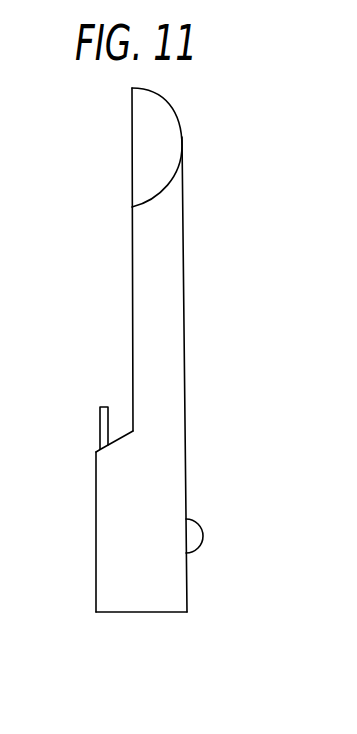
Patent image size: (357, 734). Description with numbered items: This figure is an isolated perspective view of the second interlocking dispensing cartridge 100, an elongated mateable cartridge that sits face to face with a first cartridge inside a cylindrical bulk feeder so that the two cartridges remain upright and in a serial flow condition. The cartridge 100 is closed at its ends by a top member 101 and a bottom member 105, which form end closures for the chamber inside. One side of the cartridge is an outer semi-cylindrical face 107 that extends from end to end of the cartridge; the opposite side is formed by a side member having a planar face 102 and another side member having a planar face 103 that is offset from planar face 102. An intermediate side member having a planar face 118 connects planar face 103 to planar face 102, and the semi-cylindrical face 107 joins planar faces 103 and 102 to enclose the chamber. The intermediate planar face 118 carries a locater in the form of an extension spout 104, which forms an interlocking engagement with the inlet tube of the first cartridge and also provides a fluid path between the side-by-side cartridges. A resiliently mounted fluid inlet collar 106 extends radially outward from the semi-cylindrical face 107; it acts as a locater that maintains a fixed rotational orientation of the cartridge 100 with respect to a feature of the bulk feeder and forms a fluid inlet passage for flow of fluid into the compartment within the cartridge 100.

The second interlocking dispensing cartridge 100 is at (185, 335).
The top member 101 is at (173, 146).
The planar face 102 is at (133, 328).
The planar face 103 is at (96, 507).
The extension spout 104 is at (98, 422).
The bottom member 105 is at (135, 613).
The resiliently mounted fluid inlet collar 106 is at (198, 530).
The semi-cylindrical face 107 is at (165, 267).
The intermediate planar face 118 is at (125, 428).